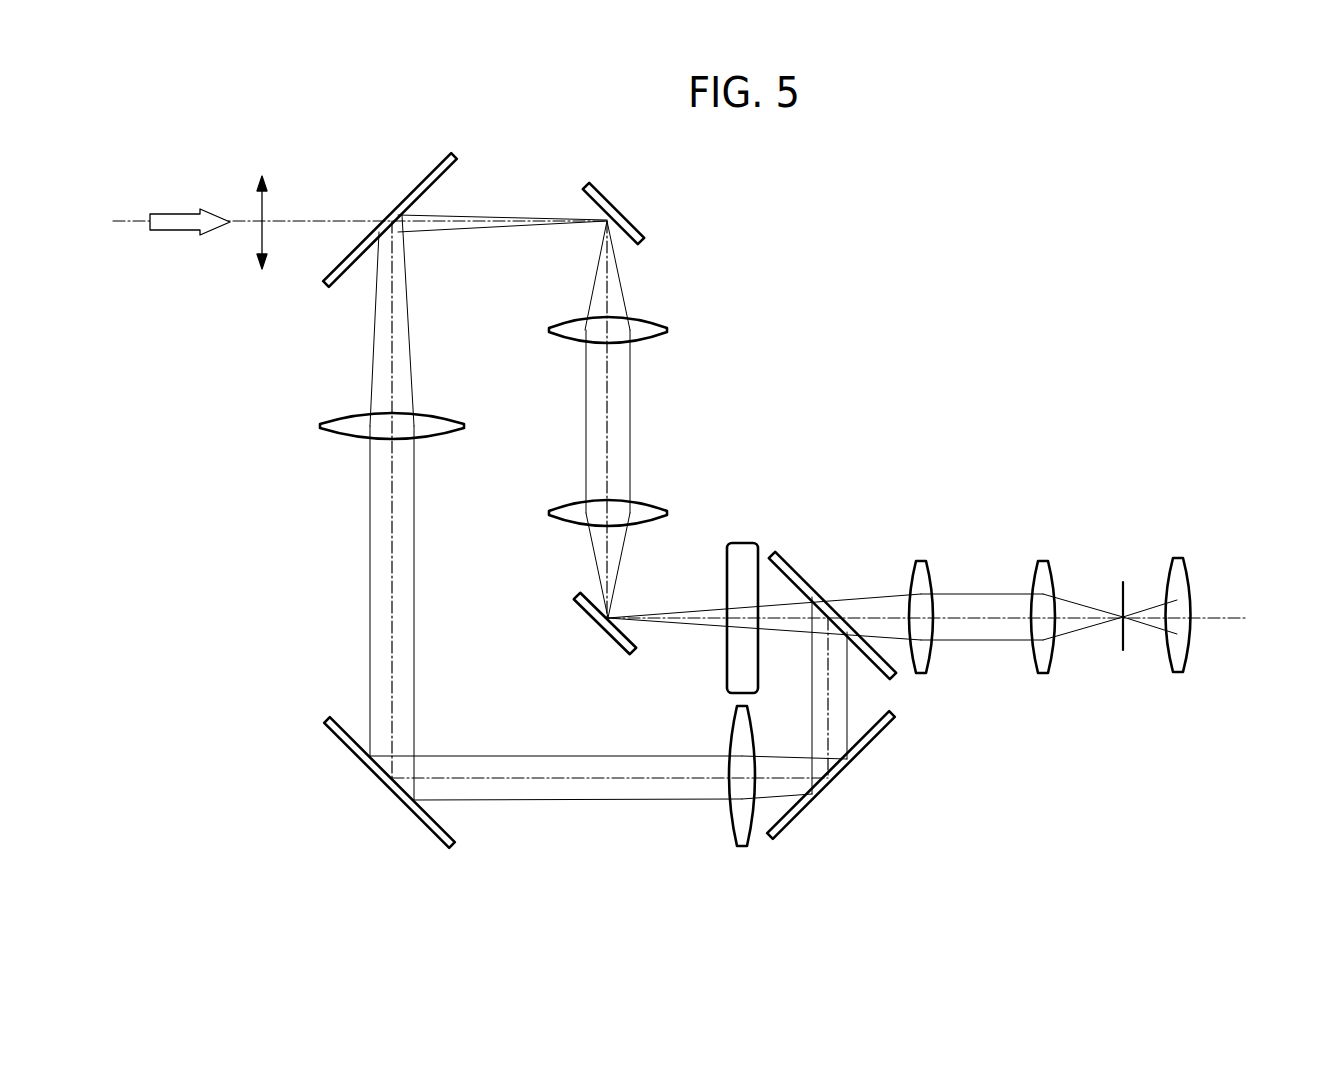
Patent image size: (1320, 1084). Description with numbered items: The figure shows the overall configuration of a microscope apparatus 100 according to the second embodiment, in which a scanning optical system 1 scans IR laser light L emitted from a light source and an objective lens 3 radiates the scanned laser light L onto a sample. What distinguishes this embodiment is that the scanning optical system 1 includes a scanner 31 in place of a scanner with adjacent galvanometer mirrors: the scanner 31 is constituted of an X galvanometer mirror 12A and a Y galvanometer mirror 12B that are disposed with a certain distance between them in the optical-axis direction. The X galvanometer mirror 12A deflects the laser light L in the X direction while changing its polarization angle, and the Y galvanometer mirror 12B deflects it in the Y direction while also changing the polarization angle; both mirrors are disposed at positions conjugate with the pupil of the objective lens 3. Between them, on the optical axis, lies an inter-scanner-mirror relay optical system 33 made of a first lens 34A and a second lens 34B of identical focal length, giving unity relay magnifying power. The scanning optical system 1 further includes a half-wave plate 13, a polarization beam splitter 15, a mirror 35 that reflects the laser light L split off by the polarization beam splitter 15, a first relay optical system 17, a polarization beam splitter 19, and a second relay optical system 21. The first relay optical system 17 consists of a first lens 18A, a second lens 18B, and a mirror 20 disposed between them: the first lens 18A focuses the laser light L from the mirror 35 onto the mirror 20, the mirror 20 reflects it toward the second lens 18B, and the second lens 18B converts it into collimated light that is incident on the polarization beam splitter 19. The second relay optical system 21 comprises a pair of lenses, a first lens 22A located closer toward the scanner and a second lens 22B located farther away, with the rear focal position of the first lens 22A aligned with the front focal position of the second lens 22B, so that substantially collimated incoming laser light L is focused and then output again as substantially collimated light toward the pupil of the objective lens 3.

The microscope apparatus 100 is at (1187, 216).
The scanning optical system 1 is at (868, 313).
The polarization beam splitter 19 is at (423, 175).
The laser light L is at (502, 215).
The X galvanometer mirror 12A is at (627, 218).
The Y galvanometer mirror 12B is at (600, 637).
The scanner 31 is at (608, 425).
The first lens 34A is at (667, 330).
The second lens 34B is at (657, 514).
The relay optical system 33 is at (685, 420).
The half-wave plate 13 is at (727, 670).
The polarization beam splitter 15 is at (807, 585).
The second relay optical system 21 is at (980, 550).
The first lens 22A is at (921, 558).
The second lens 22B is at (1044, 577).
The objective lens 3 is at (1177, 556).
The first relay optical system 17 is at (309, 809).
The second lens 18B is at (320, 426).
The mirror 20 is at (408, 807).
The first lens 18A is at (740, 848).
The mirror 35 is at (830, 792).